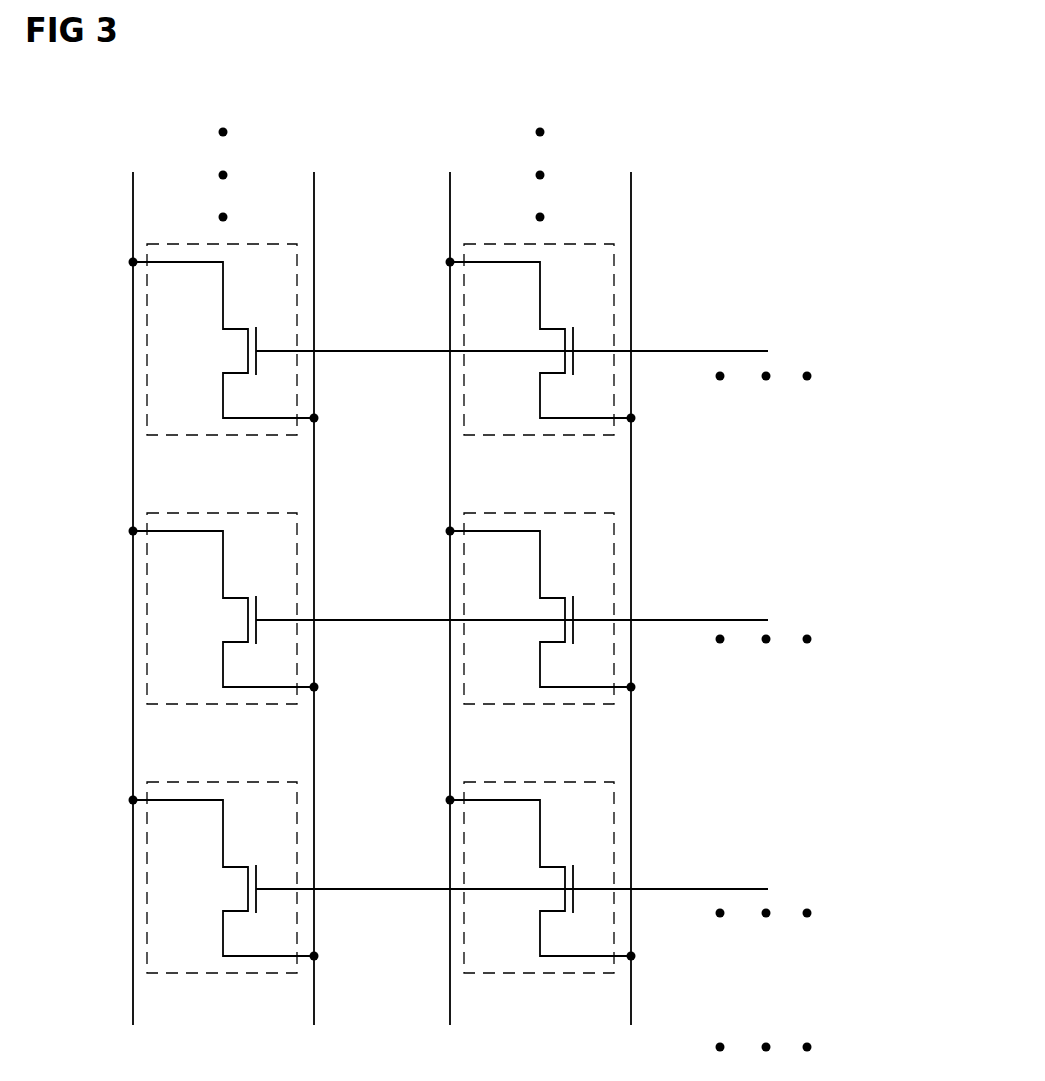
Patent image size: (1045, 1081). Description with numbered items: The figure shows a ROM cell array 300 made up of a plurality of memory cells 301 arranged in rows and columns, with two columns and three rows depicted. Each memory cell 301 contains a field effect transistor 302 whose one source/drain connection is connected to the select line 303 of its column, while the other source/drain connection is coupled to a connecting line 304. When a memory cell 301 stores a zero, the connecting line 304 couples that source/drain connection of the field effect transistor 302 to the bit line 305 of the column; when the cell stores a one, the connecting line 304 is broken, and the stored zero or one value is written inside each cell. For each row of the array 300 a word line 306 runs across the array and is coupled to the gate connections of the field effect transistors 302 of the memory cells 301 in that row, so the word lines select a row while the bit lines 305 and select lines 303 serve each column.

The ROM cell array 300 is at (737, 88).
The memory cell 301 is at (272, 243).
The field effect transistor 302 is at (250, 327).
The select line 303 is at (314, 1003).
The connecting line 304 is at (175, 262).
The bit line 305 is at (133, 1008).
The word line 306 is at (717, 350).